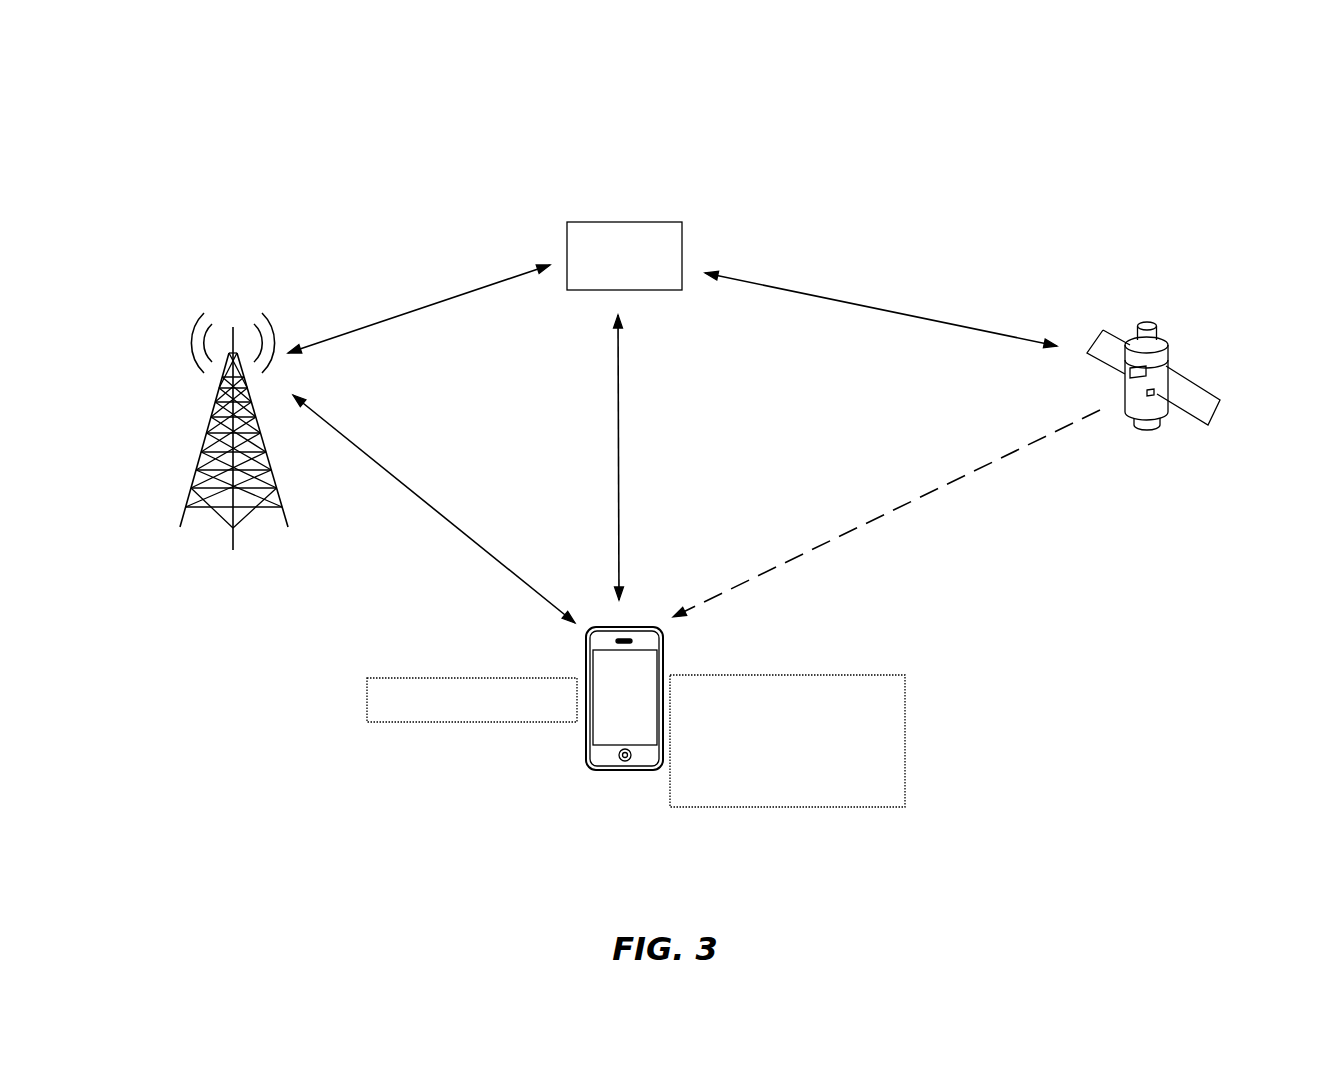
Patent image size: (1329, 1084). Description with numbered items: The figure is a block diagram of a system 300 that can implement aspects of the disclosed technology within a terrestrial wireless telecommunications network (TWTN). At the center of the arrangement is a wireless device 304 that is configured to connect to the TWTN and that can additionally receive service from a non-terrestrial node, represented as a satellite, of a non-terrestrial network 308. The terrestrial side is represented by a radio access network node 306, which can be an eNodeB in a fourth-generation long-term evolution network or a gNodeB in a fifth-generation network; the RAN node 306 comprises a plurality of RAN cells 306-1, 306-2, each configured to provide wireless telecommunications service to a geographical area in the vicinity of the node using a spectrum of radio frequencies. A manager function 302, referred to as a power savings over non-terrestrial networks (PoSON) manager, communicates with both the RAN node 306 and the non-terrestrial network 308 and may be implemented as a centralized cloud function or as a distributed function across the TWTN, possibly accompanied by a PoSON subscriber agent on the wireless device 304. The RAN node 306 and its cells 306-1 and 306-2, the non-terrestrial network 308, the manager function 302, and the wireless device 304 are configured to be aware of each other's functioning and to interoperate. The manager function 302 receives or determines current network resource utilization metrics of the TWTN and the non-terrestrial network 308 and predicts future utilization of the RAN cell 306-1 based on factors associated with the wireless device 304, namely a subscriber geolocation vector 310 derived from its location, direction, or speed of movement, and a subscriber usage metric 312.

The system 300 is at (1250, 100).
The manager function 302 is at (624, 256).
The wireless device 304 is at (624, 698).
The radio access network node 306 is at (234, 453).
The RAN cell 306-1 is at (272, 325).
The RAN cell 306-2 is at (197, 330).
The non-terrestrial network 308 is at (1153, 396).
The subscriber geolocation vector 310 is at (787, 728).
The subscriber usage metric 312 is at (473, 688).